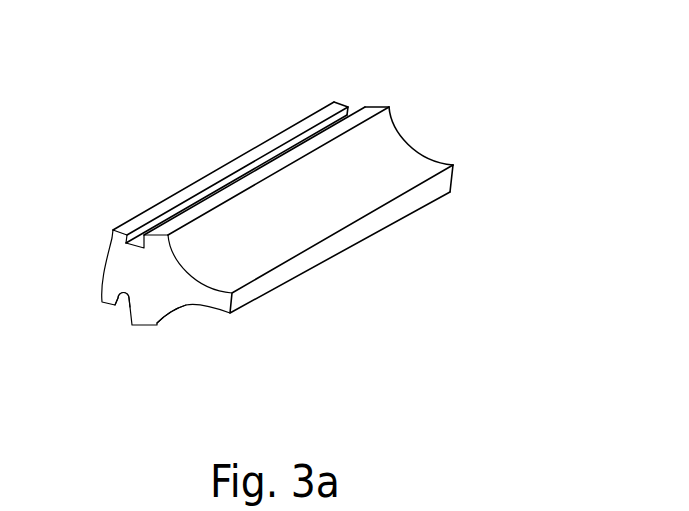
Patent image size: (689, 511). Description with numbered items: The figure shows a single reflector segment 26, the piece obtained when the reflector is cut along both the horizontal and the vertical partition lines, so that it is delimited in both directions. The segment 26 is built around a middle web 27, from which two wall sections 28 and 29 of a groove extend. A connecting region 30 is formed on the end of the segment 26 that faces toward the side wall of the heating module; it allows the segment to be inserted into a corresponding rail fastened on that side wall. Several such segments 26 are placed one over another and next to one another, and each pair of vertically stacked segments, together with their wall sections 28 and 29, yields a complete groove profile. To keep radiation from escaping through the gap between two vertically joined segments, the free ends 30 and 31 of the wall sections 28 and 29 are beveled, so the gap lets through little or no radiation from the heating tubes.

The segment 26 is at (293, 220).
The middle web 27 is at (313, 255).
The wall section 28 is at (383, 163).
The wall section 29 is at (175, 312).
The connecting region 30 is at (377, 107).
The free end 31 is at (133, 327).